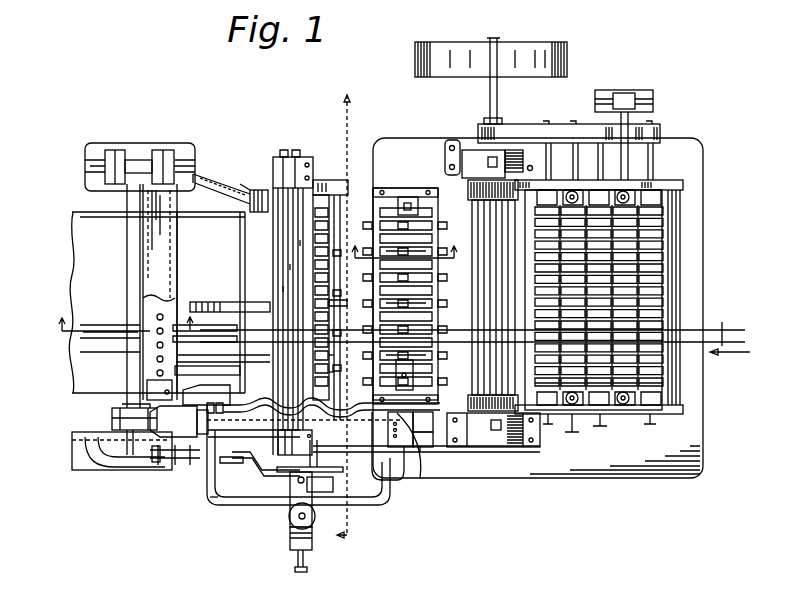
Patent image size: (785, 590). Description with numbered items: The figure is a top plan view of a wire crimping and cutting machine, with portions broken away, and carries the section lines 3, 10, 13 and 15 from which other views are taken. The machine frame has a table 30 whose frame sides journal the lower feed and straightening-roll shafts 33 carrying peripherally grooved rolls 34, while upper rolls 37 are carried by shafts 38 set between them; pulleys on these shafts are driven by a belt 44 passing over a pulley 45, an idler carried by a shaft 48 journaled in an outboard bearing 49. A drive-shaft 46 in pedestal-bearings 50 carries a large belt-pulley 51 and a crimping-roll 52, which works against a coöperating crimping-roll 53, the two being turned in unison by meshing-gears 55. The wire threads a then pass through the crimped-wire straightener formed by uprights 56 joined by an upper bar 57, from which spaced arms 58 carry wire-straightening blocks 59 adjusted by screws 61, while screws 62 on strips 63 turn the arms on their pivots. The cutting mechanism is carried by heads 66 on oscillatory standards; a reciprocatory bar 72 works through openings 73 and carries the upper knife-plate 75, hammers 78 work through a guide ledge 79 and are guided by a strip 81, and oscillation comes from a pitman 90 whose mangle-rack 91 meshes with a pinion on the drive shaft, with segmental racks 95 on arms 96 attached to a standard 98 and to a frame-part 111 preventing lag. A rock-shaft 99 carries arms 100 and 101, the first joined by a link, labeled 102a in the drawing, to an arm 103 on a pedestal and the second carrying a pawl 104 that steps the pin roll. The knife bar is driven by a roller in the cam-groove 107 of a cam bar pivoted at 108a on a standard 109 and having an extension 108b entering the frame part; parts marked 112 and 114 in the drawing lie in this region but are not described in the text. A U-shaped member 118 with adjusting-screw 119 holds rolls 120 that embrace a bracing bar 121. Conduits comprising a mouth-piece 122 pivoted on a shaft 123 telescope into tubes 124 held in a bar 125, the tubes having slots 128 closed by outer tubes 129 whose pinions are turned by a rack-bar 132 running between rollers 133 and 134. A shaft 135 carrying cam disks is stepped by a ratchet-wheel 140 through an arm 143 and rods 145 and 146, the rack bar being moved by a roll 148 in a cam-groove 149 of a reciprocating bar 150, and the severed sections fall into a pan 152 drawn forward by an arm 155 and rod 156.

The section line 3— 3 is at (344, 317).
The section line 10— 10 is at (120, 330).
The section line 13— 13 is at (406, 263).
The section line 15— 15 is at (551, 176).
The table 30 is at (668, 414).
The lower feed and straightening-roll shafts 33 is at (559, 416).
The peripherally grooved rolls 34 is at (645, 378).
The upper feed and straightening-rolls 37 is at (632, 305).
The upper roll shafts 38 is at (617, 130).
The belt 44 is at (569, 132).
The pulley 45 is at (488, 123).
The drive-shaft 46 is at (497, 100).
The idler-pulley shaft 48 is at (628, 160).
The outboard bearing 49 is at (625, 94).
The pedestal-bearings 50 is at (462, 159).
The belt-pulley 51 is at (491, 59).
The crimping-roll 52 is at (473, 308).
The coöperating crimping-roll 53 is at (414, 372).
The meshing-gears 55 is at (468, 190).
The uprights 56 is at (396, 197).
The upper horizontal bar 57 is at (576, 180).
The spaced arms 58 is at (422, 300).
The wire-straightening block 59 is at (422, 262).
The adjusting-screws 61 is at (430, 351).
The adjusting-screws 62 is at (345, 372).
The strips 63 is at (398, 208).
The heads 66 is at (300, 157).
The longitudinally reciprocatory bar 72 is at (290, 267).
The openings 73 is at (324, 372).
The knife-plate 75 is at (300, 243).
The hammers 78 is at (323, 355).
The guide ledge 79 is at (338, 195).
The strip 81 is at (320, 200).
The pitman 90 is at (380, 458).
The mangle-rack 91 is at (430, 452).
The segmental racks 95 is at (258, 192).
The arms 96 is at (223, 187).
The standard 98 is at (192, 147).
The rock-shaft 99 is at (283, 289).
The arm 100 is at (291, 490).
The arm 101 is at (285, 471).
The housing 102a is at (200, 424).
The arm 103 is at (345, 449).
The pawl 104 is at (340, 486).
The cam-groove 107 is at (290, 408).
The pivot 108a is at (425, 472).
The extension 108b is at (215, 410).
The standard 109 is at (413, 420).
The frame-part 111 is at (200, 400).
The U bracket 112 is at (207, 478).
The bar 114 is at (210, 437).
The U-shaped member 118 is at (292, 540).
The adjusting-screw 119 is at (305, 566).
The rolls 120 is at (315, 510).
The bar 121 is at (207, 500).
The mouth-piece 122 is at (246, 347).
The shaft 123 is at (240, 372).
The stationary tube 124 is at (220, 343).
The bar 125 is at (178, 302).
The longitudinal slots 128 is at (172, 388).
The larger tube 129 is at (108, 332).
The rack-bar 132 is at (135, 268).
The rollers 133 is at (138, 158).
The rollers 134 is at (114, 416).
The shaft 135 is at (170, 462).
The ratchet-wheel 140 is at (150, 460).
The arm 143 is at (168, 461).
The rod 145 is at (262, 472).
The rod 146 is at (240, 467).
The roll 148 is at (120, 441).
The cam-groove 149 is at (96, 463).
The bar 150 is at (78, 450).
The trough or pan 152 is at (74, 282).
The arm 155 is at (337, 300).
The rod 156 is at (258, 305).
The wire threads a is at (475, 330).